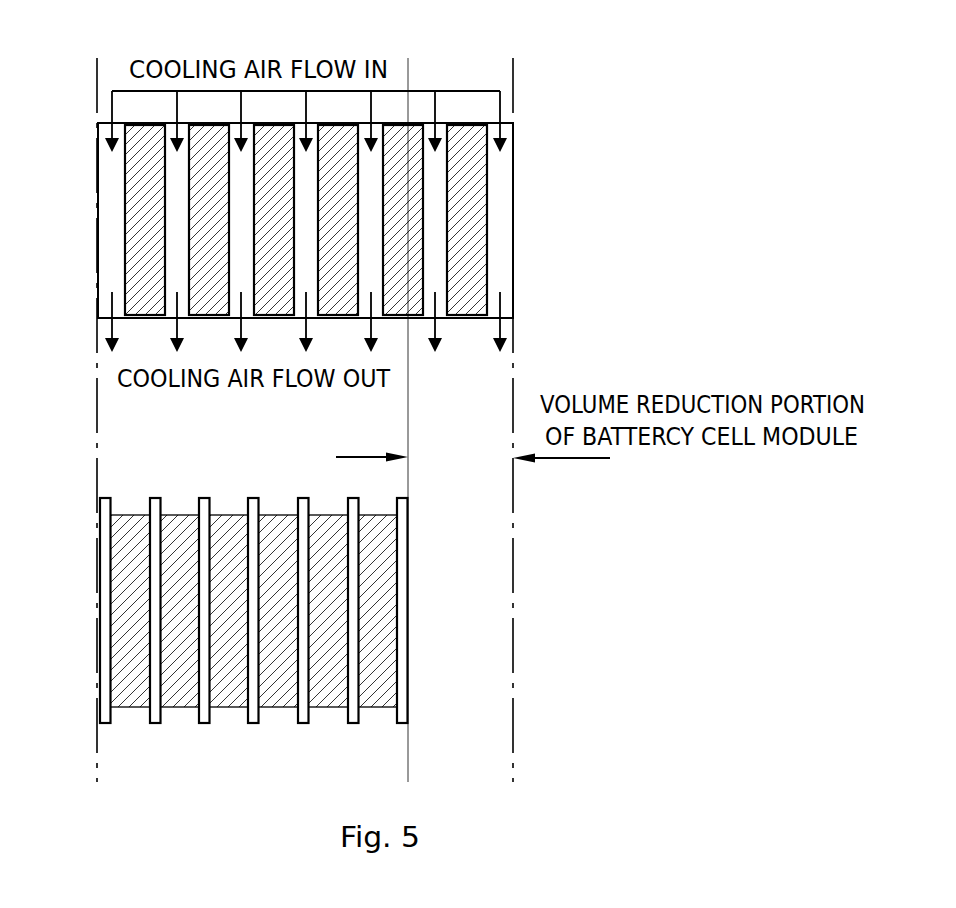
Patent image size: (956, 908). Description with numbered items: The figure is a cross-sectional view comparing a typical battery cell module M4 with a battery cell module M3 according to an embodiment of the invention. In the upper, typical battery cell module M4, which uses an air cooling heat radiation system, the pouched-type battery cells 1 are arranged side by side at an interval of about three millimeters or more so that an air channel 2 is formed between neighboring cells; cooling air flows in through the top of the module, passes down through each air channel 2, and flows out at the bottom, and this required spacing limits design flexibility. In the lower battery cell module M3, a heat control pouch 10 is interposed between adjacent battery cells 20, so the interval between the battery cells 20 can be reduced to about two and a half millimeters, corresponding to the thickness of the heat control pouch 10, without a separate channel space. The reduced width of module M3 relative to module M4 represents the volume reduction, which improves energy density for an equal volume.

The pouched-type battery cell 1 is at (142, 198).
The air channel 2 is at (180, 258).
The heat control pouch 10 is at (153, 577).
The battery cell 20 is at (130, 628).
The typical battery cell module M4 is at (567, 223).
The battery cell module M3 is at (352, 610).